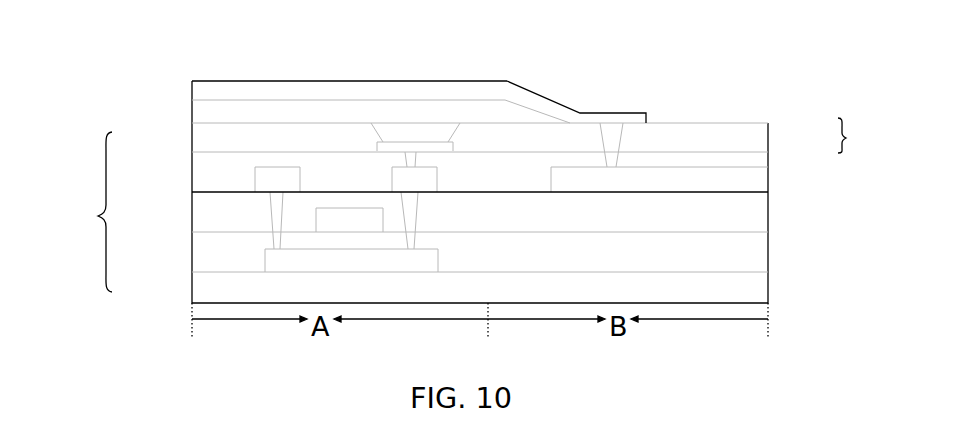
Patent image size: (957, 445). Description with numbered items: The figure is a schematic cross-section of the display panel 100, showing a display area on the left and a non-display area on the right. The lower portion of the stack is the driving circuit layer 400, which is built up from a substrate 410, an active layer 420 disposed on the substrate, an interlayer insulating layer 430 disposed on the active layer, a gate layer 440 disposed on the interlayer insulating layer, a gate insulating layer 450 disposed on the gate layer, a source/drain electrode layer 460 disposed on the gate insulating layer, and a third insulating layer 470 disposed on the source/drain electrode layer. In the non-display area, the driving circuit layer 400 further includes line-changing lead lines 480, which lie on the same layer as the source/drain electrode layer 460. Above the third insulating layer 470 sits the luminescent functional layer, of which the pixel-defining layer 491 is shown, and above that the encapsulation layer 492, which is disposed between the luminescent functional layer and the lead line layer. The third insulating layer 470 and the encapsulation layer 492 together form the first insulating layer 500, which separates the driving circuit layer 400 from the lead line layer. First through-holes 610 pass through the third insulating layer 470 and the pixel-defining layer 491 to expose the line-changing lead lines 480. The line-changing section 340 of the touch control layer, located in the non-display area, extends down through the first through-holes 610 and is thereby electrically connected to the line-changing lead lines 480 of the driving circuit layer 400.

The display panel 100 is at (103, 37).
The line-changing section 340 is at (540, 103).
The driving circuit layer 400 is at (85, 212).
The substrate 410 is at (192, 288).
The active layer 420 is at (265, 259).
The interlayer insulating layer 430 is at (192, 245).
The gate layer 440 is at (316, 223).
The gate insulating layer 450 is at (192, 198).
The source/drain electrode layer 460 is at (255, 180).
The third insulating layer 470 is at (192, 152).
The line-changing lead lines 480 is at (768, 178).
The pixel-defining layer 491 is at (192, 133).
The encapsulation layer 492 is at (192, 110).
The first insulating layer 500 is at (863, 135).
The first through-holes 610 is at (621, 146).